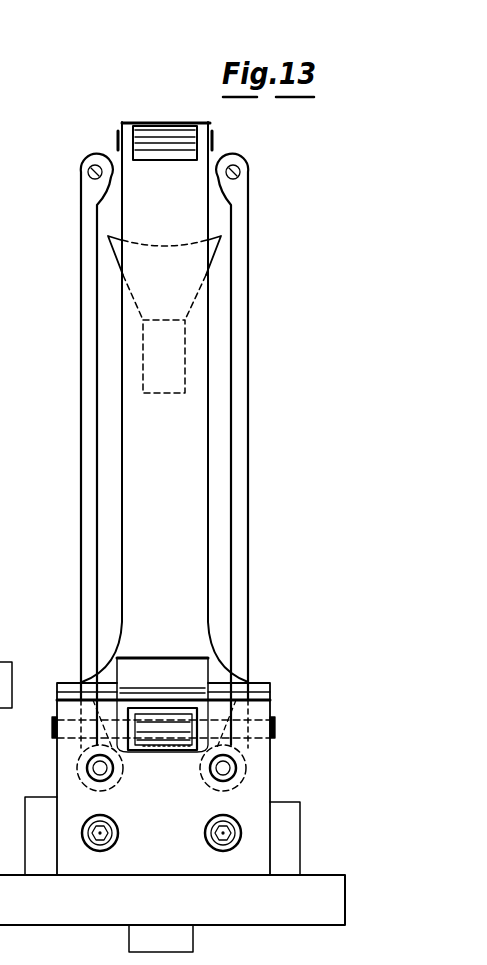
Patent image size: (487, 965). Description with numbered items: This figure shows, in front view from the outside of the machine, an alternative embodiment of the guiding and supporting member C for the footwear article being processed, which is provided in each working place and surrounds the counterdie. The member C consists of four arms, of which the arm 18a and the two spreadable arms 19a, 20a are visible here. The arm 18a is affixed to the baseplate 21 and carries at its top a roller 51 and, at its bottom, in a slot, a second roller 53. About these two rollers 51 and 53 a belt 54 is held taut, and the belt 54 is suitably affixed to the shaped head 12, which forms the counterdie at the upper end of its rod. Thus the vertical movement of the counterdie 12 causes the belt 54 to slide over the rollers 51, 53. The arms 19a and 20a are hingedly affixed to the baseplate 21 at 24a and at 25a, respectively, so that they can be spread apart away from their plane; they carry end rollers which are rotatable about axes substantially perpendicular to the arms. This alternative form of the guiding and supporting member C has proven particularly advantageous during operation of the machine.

The shaped head 12 is at (216, 241).
The arm 18a is at (192, 450).
The arm 19a is at (88, 328).
The arm 20a is at (238, 322).
The baseplate 21 is at (287, 860).
The hinge point 24a is at (97, 768).
The hinge point 25a is at (226, 768).
The roller 51 is at (153, 138).
The second roller 53 is at (141, 746).
The belt 54 is at (179, 124).
The guiding and supporting member C is at (248, 500).